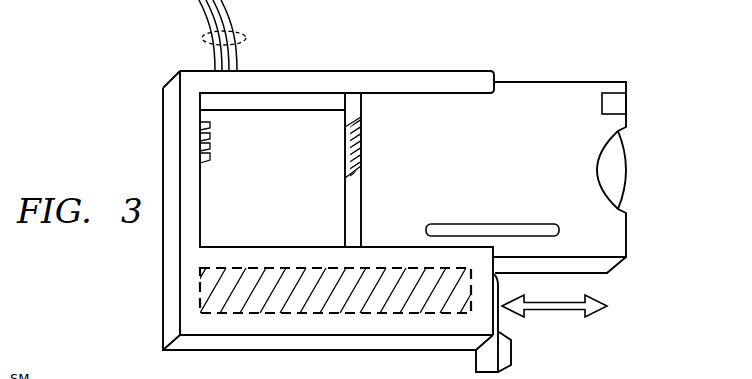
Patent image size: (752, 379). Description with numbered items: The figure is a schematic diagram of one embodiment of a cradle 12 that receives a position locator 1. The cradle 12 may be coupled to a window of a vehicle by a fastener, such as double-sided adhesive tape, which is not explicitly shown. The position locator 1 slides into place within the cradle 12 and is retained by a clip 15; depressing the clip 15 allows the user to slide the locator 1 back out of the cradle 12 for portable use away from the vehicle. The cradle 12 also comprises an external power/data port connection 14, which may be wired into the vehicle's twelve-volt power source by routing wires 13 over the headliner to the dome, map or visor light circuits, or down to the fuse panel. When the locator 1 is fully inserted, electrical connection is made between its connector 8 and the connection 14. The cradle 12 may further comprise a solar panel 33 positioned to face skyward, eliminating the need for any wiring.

The position locator 1 is at (522, 82).
The connector 8 is at (350, 128).
The cradle 12 is at (398, 71).
The wires 13 is at (203, 37).
The external power/data port connection 14 is at (200, 143).
The clip 15 is at (513, 347).
The solar panel 33 is at (200, 290).